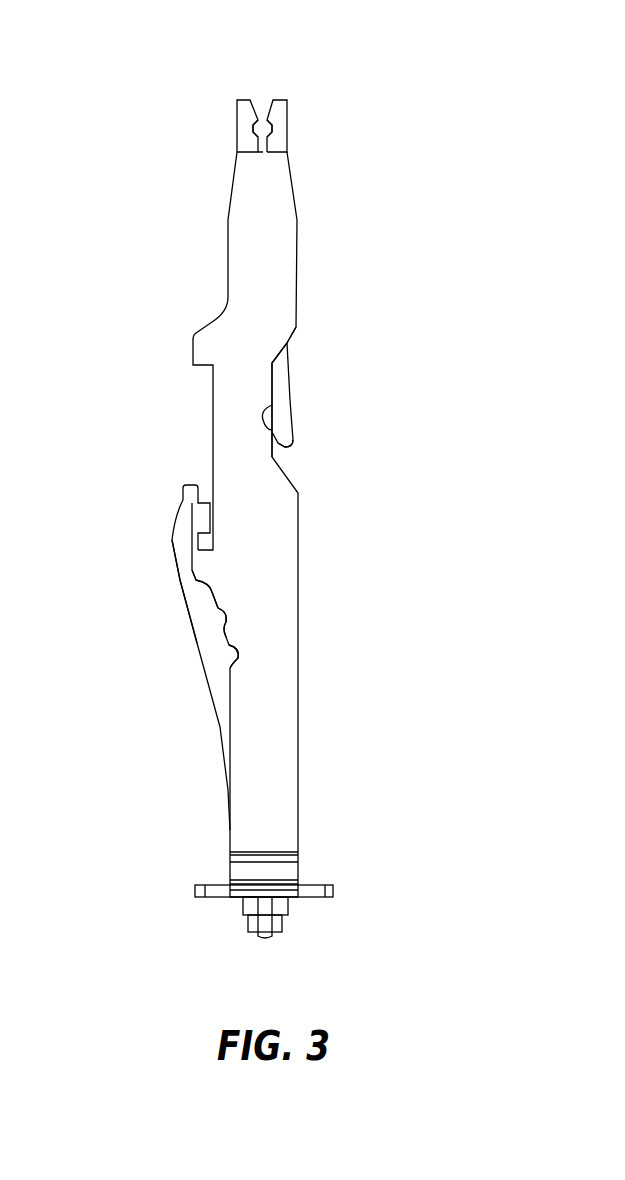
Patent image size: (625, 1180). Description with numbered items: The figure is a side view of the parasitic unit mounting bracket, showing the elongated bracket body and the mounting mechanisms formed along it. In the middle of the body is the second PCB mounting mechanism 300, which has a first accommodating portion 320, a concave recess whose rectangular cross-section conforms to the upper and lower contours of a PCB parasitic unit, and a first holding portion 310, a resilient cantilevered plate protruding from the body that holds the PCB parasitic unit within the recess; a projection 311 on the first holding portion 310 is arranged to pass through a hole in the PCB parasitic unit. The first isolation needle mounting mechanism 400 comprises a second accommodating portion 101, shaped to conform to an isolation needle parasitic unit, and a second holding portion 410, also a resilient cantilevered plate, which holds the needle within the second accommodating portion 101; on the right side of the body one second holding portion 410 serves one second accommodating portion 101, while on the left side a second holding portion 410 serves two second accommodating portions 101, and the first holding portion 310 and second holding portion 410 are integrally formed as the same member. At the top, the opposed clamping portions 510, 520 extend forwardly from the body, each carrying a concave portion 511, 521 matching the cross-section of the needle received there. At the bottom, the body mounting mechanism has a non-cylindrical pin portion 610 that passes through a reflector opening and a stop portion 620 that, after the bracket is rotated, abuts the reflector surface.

The second PCB mounting mechanism 300 is at (213, 460).
The first holding portion 310 is at (182, 555).
The projection 311 is at (193, 513).
The first accommodating portion 320 is at (192, 447).
The first isolation needle mounting mechanism 400 is at (354, 447).
The second holding portion 410 is at (202, 636).
The second accommodating portion 101 is at (230, 652).
The clamping portion 510 is at (248, 100).
The concave portion 511 is at (262, 120).
The clamping portion 520 is at (285, 135).
The concave portion 521 is at (275, 120).
The pin portion 610 is at (283, 930).
The stop portion 620 is at (337, 895).